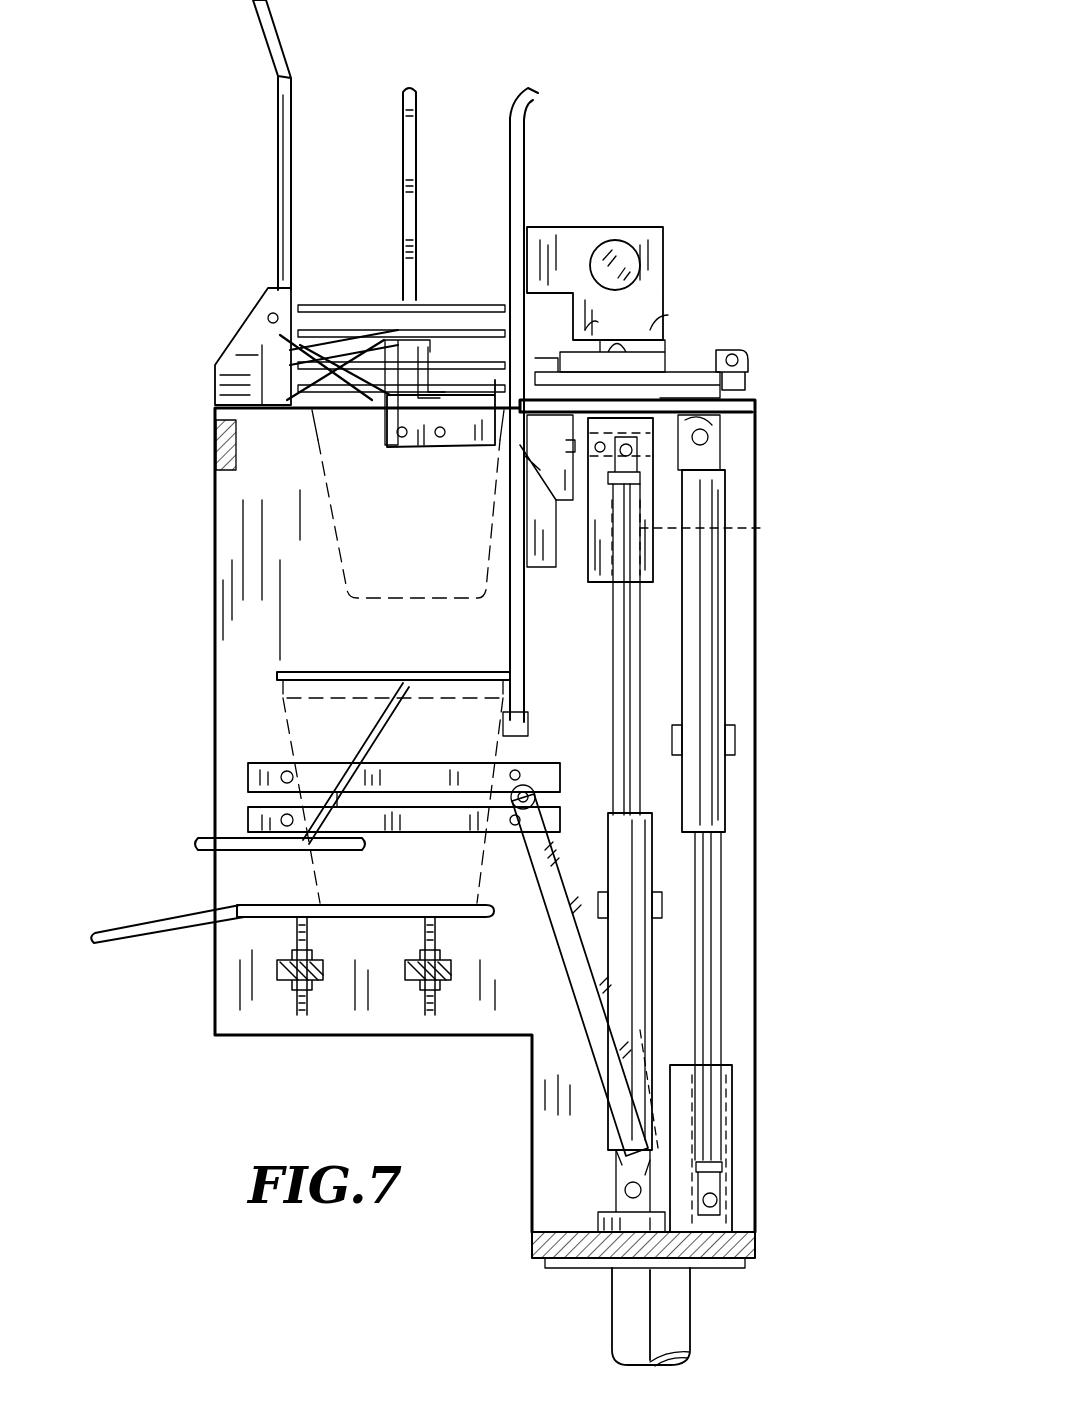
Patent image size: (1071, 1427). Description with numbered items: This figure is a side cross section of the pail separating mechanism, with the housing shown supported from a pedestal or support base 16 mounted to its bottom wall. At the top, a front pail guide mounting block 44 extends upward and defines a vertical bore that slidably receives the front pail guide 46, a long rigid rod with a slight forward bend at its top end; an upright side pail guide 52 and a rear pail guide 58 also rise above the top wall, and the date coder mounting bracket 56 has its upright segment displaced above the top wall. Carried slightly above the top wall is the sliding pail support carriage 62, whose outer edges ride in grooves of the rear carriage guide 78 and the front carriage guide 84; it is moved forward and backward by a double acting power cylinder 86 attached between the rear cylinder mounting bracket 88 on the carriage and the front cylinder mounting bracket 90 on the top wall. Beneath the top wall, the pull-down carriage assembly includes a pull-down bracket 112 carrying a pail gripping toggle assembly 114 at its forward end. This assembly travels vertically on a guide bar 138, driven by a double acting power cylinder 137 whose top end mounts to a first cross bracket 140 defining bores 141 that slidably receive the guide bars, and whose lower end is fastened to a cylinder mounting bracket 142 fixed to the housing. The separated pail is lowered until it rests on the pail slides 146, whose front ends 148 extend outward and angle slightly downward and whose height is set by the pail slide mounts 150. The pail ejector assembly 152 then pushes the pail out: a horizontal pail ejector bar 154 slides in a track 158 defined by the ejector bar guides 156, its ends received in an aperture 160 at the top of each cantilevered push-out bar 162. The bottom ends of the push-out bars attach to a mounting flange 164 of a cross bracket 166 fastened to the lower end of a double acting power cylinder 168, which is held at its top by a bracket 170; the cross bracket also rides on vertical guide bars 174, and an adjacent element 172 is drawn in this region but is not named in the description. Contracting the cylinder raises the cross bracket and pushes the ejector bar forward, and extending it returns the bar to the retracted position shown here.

The support base 16 is at (660, 1305).
The front pail guide mounting block 44 is at (245, 322).
The front pail guide 46 is at (276, 76).
The side pail guide 52 is at (403, 127).
The date coder mounting bracket 56 is at (612, 228).
The rear pail guide 58 is at (522, 112).
The sliding pail support carriage 62 is at (430, 385).
The rear carriage guide 78 is at (600, 380).
The front carriage guide 84 is at (475, 400).
The double acting power cylinder 86 is at (688, 354).
The rear cylinder mounting bracket 88 is at (748, 372).
The front cylinder mounting bracket 90 is at (555, 414).
The pull-down bracket 112 is at (548, 470).
The pail gripping toggle assembly 114 is at (420, 330).
The double acting power cylinder 137 is at (622, 670).
The guide bar 138 is at (640, 645).
The first cross bracket 140 is at (650, 565).
The bore 141 is at (722, 527).
The cylinder mounting bracket 142 is at (620, 1202).
The pail slide 146 is at (268, 905).
The front end 148 is at (100, 930).
The pail slide mount 150 is at (425, 935).
The pail ejector assembly 152 is at (550, 1038).
The pail ejector bar 154 is at (530, 797).
The ejector bar guide 156 is at (445, 792).
The guide groove or track 158 is at (318, 775).
The aperture 160 is at (528, 788).
The push-out bar 162 is at (568, 950).
The mounting flange 164 is at (650, 1162).
The cross bracket 166 is at (730, 1142).
The double acting power cylinder 168 is at (705, 632).
The bracket 170 is at (718, 425).
The slot 172 is at (722, 1092).
The vertical guide bar 174 is at (690, 870).